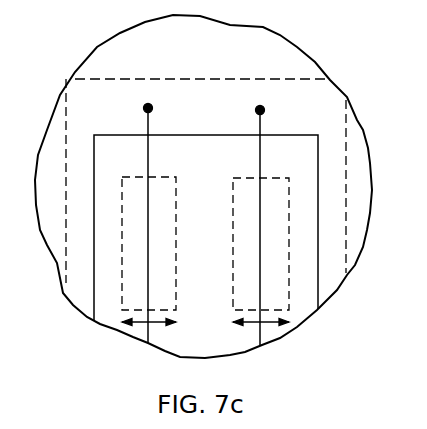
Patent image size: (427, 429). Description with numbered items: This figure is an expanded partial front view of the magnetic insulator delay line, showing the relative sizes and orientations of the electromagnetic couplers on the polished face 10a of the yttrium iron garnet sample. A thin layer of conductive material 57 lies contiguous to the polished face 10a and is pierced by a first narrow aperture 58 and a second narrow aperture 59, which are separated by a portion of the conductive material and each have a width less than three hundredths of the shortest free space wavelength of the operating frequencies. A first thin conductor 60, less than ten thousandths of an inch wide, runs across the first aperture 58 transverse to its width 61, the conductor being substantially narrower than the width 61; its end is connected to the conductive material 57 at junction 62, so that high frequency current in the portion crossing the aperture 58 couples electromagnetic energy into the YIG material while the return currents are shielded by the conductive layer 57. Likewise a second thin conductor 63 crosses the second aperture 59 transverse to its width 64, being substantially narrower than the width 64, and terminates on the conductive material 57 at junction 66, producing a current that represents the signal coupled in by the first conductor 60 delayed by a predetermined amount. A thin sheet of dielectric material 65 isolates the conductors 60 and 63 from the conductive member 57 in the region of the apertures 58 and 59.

The polished face 10a is at (322, 97).
The thin layer of conductive material 57 is at (206, 163).
The first narrow aperture 58 is at (178, 218).
The second narrow aperture 59 is at (232, 273).
The first thin conductor 60 is at (147, 161).
The width of first aperture 61 is at (178, 322).
The junction 62 is at (144, 108).
The second thin conductor 63 is at (262, 168).
The width of second aperture 64 is at (231, 324).
The thin sheet of dielectric material 65 is at (195, 134).
The junction 66 is at (265, 110).